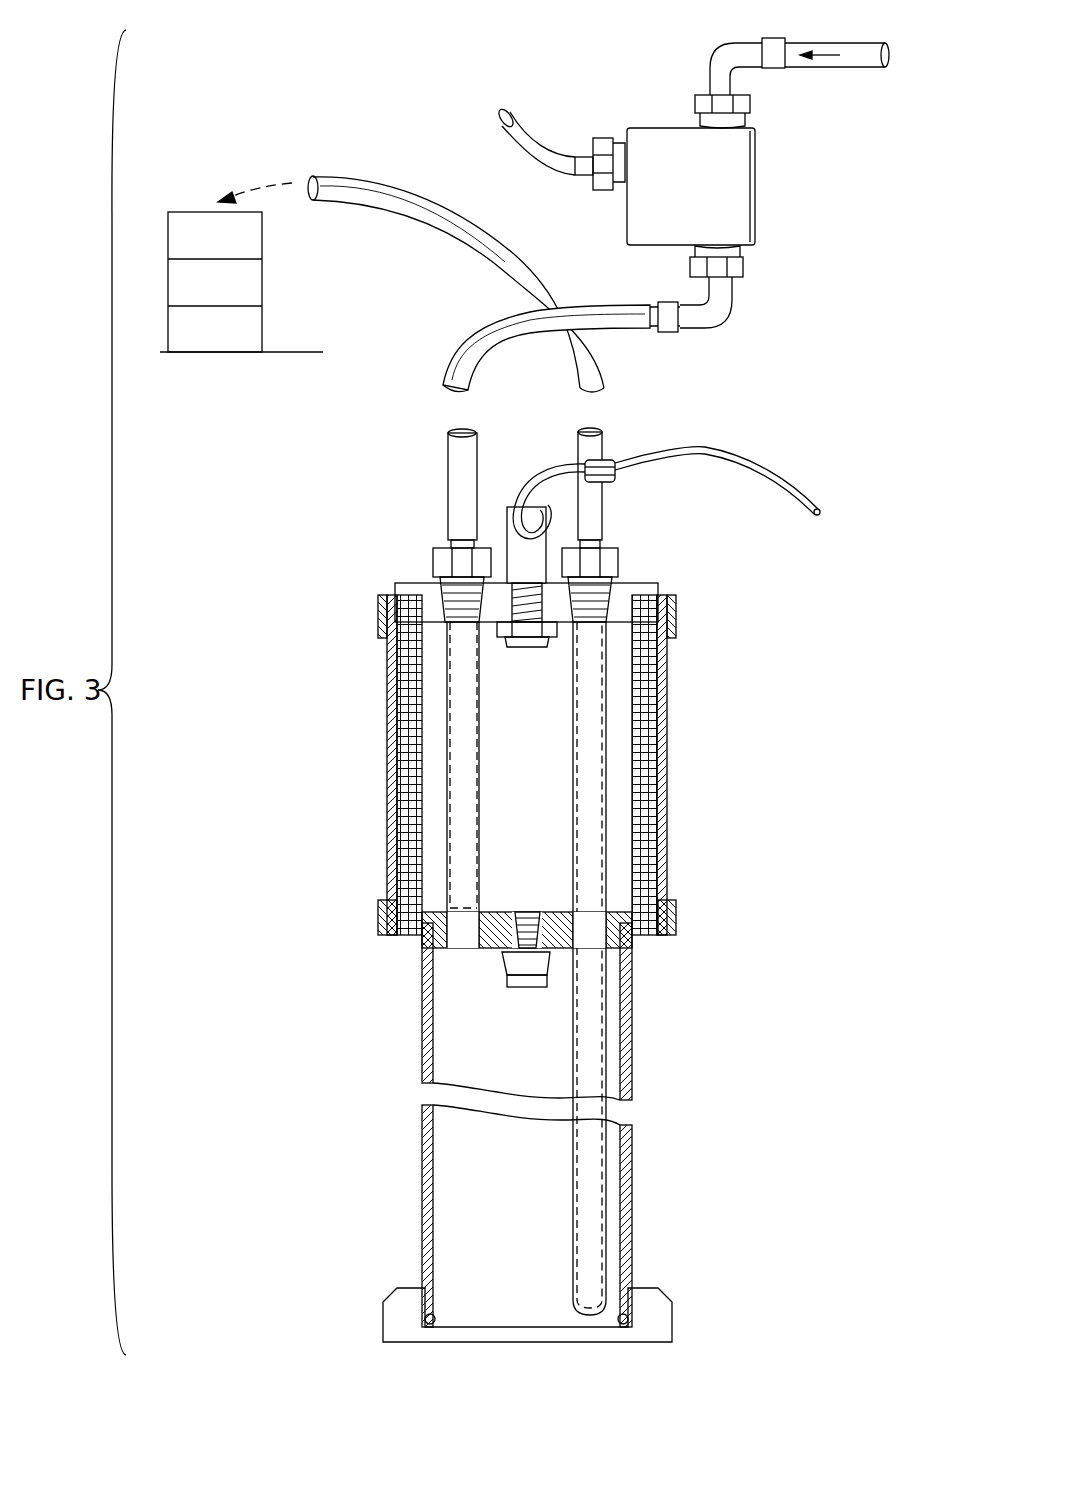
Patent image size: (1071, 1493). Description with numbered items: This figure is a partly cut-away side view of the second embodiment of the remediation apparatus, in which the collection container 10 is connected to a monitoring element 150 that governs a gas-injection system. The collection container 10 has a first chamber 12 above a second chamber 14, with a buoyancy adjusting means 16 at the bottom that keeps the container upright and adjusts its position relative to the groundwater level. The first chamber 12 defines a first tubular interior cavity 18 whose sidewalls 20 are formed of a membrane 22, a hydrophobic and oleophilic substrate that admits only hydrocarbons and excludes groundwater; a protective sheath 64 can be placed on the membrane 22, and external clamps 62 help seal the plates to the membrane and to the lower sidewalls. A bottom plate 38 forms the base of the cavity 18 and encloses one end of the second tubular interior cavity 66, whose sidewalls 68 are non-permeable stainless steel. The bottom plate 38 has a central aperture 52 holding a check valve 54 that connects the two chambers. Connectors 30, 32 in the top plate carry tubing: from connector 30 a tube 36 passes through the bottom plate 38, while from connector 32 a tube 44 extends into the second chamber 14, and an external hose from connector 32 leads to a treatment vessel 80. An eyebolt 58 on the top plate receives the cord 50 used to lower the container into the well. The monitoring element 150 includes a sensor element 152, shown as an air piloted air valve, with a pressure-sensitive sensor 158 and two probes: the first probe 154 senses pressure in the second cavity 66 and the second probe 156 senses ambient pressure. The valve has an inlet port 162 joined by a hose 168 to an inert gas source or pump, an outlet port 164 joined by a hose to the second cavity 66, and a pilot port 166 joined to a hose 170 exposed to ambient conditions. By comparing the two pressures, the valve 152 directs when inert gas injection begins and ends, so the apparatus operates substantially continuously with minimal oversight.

The collection container 10 is at (360, 476).
The first chamber 12 is at (430, 752).
The second chamber 14 is at (450, 1157).
The buoyancy adjusting means 16 is at (700, 1333).
The first tubular interior cavity 18 is at (527, 715).
The sidewalls 20 is at (630, 712).
The membrane 22 is at (405, 823).
The connector 30 is at (442, 555).
The connector 32 is at (612, 555).
The tube 36 is at (478, 777).
The bottom plate 38 is at (426, 940).
The tube 44 is at (585, 825).
The cord 50 is at (772, 468).
The central aperture 52 is at (527, 905).
The check valve 54 is at (512, 965).
The eyebolt 58 is at (510, 528).
The external clamps 62 is at (380, 622).
The protective sheath 64 is at (660, 813).
The second tubular interior cavity 66 is at (527, 1172).
The sidewalls 68 is at (635, 1180).
The treatment vessel 80 is at (212, 345).
The monitoring element 150 is at (672, 168).
The sensor element 152 is at (752, 170).
The first probe 154 is at (716, 305).
The second probe 156 is at (585, 158).
The pressure-sensitive sensor 158 is at (693, 180).
The inlet port 162 is at (742, 105).
The outlet port 164 is at (745, 268).
The pilot port 166 is at (603, 170).
The hose 168 is at (812, 16).
The hose 170 is at (522, 105).